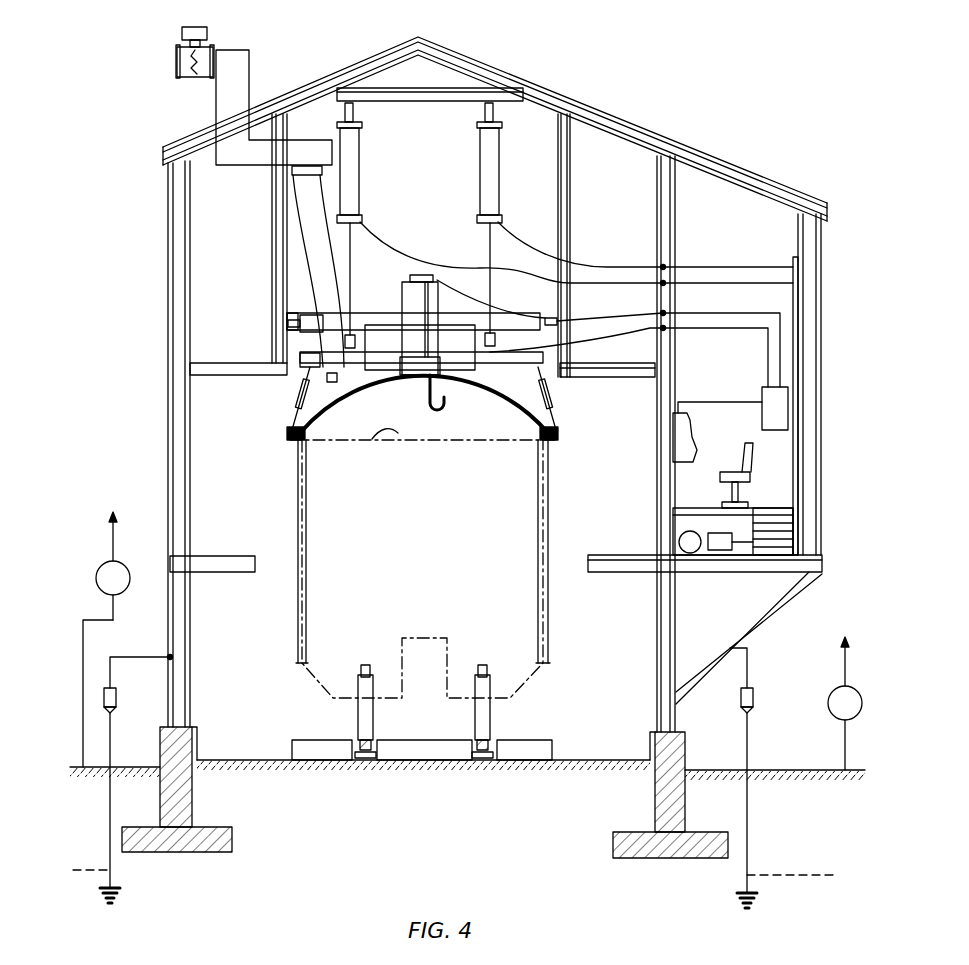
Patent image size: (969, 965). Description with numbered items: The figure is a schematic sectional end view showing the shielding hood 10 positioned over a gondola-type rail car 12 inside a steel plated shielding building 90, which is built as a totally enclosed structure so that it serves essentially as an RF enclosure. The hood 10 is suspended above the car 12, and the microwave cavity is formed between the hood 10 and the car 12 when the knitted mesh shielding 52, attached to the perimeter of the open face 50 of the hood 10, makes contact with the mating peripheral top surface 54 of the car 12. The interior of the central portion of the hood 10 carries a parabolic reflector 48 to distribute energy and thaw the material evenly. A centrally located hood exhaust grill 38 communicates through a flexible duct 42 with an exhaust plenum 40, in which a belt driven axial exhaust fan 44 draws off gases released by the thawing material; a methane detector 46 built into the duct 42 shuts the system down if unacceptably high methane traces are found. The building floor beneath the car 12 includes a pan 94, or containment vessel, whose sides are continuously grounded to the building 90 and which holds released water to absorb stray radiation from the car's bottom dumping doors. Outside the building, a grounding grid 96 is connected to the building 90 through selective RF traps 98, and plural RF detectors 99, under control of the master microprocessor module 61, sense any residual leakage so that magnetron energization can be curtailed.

The shielding hood 10 is at (547, 393).
The gondola-type rail car 12 is at (550, 598).
The hood exhaust grill 38 is at (352, 390).
The exhaust plenum 40 is at (237, 166).
The flexible duct 42 is at (307, 218).
The belt driven axial exhaust fan 44 is at (200, 50).
The methane detector 46 is at (327, 377).
The parabolic reflector 48 is at (490, 388).
The open face of the hood 50 is at (305, 437).
The knitted mesh shielding 52 is at (293, 443).
The peripheral top surface 54 is at (403, 441).
The master microprocessor module 61 is at (673, 433).
The shielding building 90 is at (593, 107).
The pan (containment vessel) 94 is at (537, 740).
The grounding grid 96 is at (110, 820).
The RF traps 98 is at (116, 694).
The RF detectors 99 is at (123, 568).